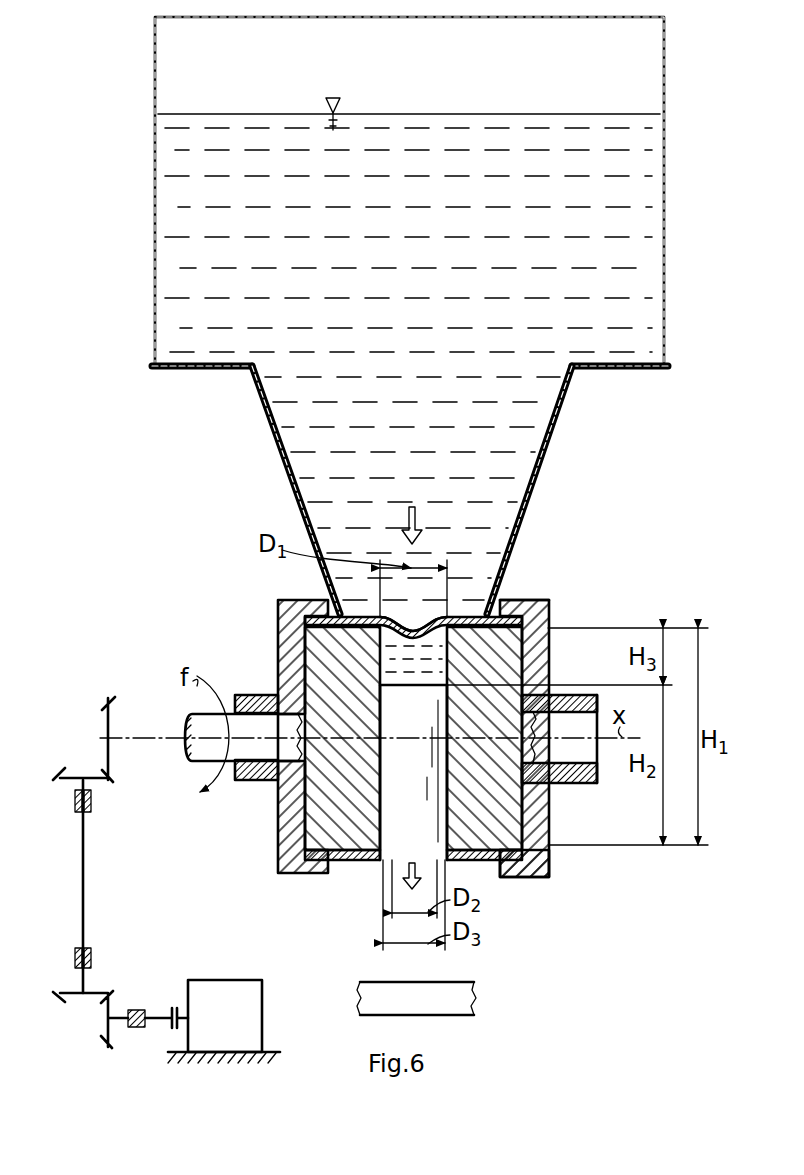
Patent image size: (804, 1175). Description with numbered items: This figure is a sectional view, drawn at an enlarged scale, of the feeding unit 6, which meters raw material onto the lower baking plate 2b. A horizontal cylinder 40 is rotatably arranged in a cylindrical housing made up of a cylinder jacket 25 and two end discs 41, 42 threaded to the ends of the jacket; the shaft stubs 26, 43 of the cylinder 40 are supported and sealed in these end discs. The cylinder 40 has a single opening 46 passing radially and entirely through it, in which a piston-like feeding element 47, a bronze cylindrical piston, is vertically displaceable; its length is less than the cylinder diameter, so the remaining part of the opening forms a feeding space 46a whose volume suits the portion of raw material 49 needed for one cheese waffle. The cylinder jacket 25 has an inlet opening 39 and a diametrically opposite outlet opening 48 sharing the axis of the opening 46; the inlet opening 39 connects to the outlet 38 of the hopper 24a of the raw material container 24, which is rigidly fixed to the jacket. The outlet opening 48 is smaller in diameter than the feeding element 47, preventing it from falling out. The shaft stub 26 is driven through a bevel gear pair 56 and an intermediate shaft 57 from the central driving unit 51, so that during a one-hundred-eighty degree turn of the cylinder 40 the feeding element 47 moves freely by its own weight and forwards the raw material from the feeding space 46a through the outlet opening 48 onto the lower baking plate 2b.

The feeding unit 6 is at (150, 154).
The raw material 49 is at (625, 168).
The raw material container 24 is at (668, 238).
The hopper 24a is at (290, 476).
The inlet opening 39 is at (420, 626).
The outlet 38 is at (403, 619).
The cylinder jacket 25 is at (512, 604).
The cylinder 40 is at (547, 620).
The opening 46 is at (497, 656).
The feeding space 46a is at (392, 673).
The shaft stub 43 is at (577, 732).
The shaft stub 26 is at (187, 750).
The end disc 42 is at (278, 808).
The end disc 41 is at (548, 822).
The feeding element 47 is at (370, 861).
The outlet opening 48 is at (402, 862).
The bevel gear pair 56 is at (101, 775).
The intermediate shaft 57 is at (83, 883).
The central driving unit 51 is at (230, 1003).
The lower baking plate 2b is at (470, 992).